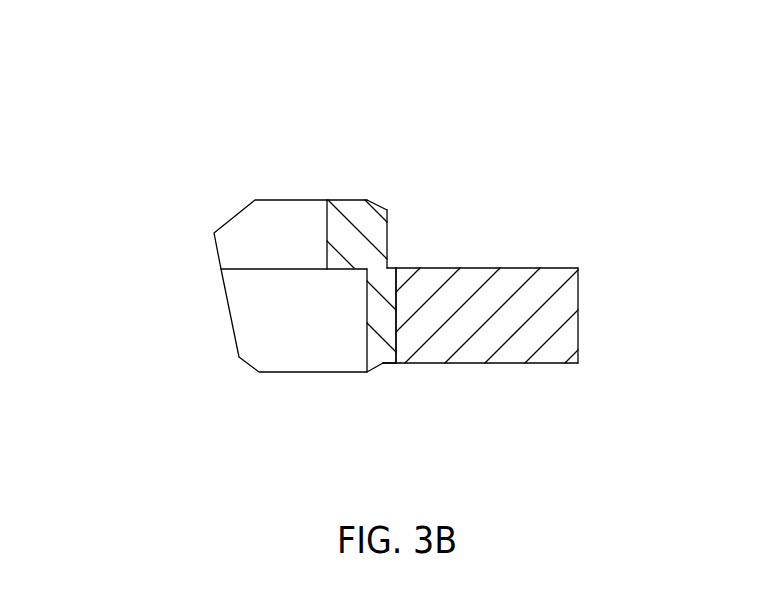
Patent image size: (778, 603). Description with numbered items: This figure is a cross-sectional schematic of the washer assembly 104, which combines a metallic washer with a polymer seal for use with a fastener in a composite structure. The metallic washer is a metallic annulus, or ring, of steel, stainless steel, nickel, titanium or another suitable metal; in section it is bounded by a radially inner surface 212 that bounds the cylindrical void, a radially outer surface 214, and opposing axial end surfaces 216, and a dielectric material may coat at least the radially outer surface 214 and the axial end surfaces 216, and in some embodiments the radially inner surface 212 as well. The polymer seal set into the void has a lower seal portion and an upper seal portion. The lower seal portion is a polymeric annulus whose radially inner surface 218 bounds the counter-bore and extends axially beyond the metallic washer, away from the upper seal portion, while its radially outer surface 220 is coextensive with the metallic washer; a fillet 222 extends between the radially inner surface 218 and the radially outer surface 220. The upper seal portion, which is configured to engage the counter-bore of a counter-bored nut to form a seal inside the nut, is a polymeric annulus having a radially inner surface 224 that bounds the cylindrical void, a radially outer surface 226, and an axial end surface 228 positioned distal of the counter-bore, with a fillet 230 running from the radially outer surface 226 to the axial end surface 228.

The washer assembly 104 is at (121, 73).
The radially inner surface 212 is at (384, 292).
The radially outer surface 214 is at (593, 300).
The opposing axial end surfaces 216 is at (513, 255).
The radially inner surface 218 is at (353, 344).
The radially outer surface 220 is at (412, 372).
The fillet 222 is at (392, 380).
The radially inner surface 224 is at (314, 232).
The radially outer surface 226 is at (400, 243).
The axial end surface 228 is at (336, 188).
The fillet 230 is at (392, 196).